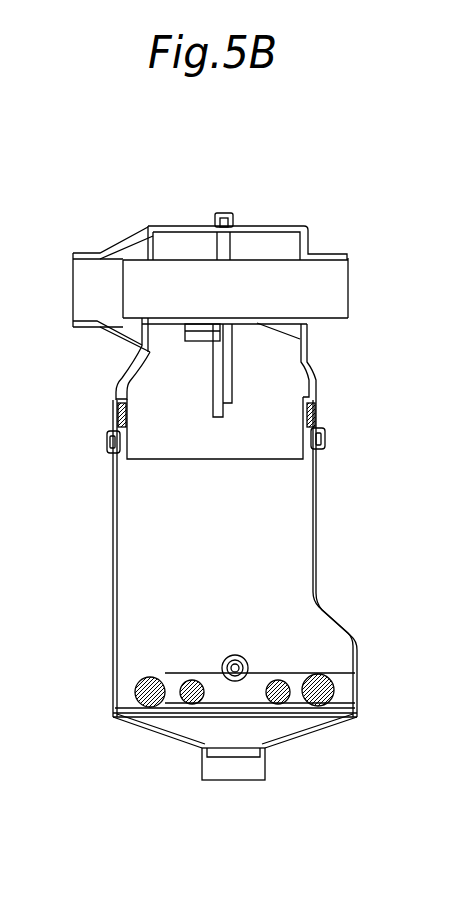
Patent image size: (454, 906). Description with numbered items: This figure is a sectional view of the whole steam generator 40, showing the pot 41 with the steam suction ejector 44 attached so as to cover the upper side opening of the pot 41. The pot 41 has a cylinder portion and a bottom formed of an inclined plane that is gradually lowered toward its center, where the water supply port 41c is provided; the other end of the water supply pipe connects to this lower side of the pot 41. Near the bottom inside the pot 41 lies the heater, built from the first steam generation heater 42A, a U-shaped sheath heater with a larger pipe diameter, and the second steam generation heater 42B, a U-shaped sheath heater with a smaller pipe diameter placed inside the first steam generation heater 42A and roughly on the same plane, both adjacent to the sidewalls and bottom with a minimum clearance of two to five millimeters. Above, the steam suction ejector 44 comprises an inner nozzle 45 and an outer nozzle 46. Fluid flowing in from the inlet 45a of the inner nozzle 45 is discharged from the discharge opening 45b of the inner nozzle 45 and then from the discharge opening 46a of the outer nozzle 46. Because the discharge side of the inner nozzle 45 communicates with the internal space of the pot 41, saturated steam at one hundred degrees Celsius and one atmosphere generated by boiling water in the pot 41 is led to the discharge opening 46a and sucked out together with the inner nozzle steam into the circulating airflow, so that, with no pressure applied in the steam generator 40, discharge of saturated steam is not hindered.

The steam generator 40 is at (332, 223).
The pot 41 is at (315, 523).
The water supply port 41c is at (230, 770).
The first steam generation heater 42A is at (337, 673).
The second steam generation heater 42B is at (287, 700).
The steam suction ejector 44 is at (285, 227).
The inner nozzle 45 is at (183, 263).
The inlet 45a is at (325, 283).
The discharge opening 45b is at (137, 292).
The outer nozzle 46 is at (117, 248).
The discharge opening 46a is at (85, 302).